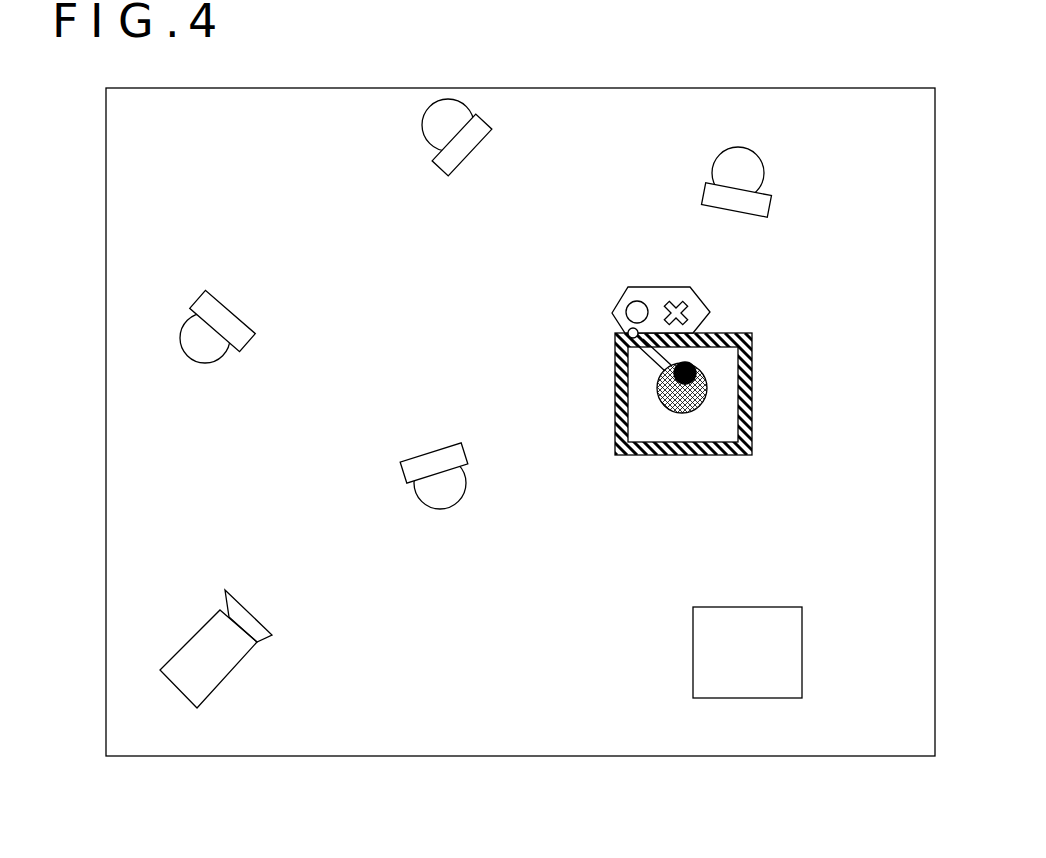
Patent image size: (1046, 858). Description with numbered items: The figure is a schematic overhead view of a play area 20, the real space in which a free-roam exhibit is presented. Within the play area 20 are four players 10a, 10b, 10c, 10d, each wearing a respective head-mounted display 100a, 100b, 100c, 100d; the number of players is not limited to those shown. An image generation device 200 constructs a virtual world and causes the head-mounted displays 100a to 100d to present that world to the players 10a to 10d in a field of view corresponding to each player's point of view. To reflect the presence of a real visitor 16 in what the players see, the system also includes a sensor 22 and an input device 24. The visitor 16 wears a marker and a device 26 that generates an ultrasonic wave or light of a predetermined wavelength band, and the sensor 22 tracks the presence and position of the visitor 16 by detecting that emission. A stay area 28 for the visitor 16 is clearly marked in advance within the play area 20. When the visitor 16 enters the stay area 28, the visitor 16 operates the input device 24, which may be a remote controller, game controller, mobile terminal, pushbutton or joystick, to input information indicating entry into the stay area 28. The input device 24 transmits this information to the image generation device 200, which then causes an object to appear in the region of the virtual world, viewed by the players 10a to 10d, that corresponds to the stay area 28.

The play area 20 is at (106, 170).
The player 10a is at (428, 142).
The player 10b is at (718, 163).
The player 10c is at (222, 358).
The player 10d is at (467, 483).
The head-mounted display 100a is at (447, 177).
The head-mounted display 100b is at (703, 200).
The head-mounted display 100c is at (252, 343).
The head-mounted display 100d is at (465, 445).
The input device 24 is at (612, 313).
The stay area 28 is at (750, 333).
The visitor 16 is at (705, 397).
The device 26 is at (695, 372).
The sensor 22 is at (242, 658).
The image generation device 200 is at (802, 655).